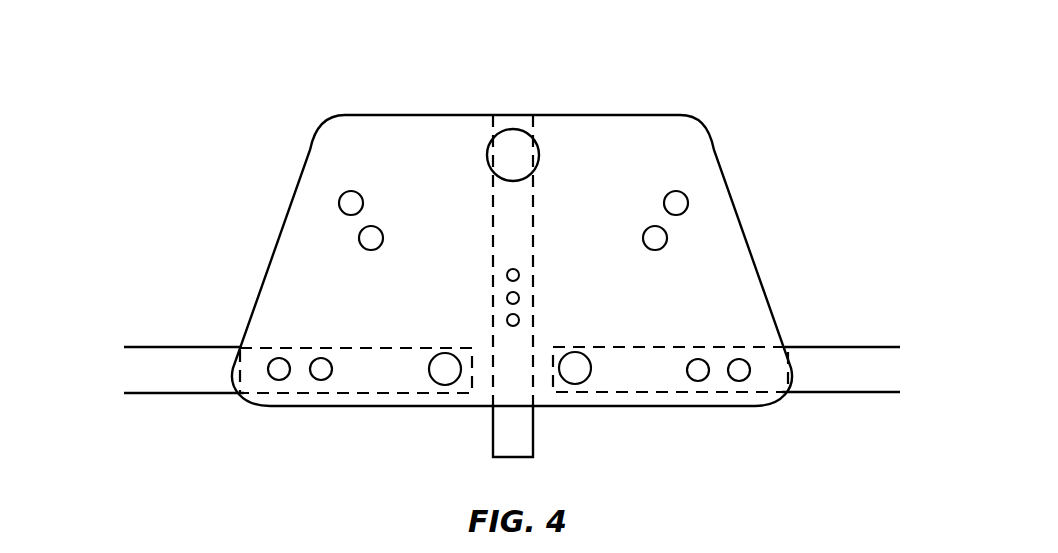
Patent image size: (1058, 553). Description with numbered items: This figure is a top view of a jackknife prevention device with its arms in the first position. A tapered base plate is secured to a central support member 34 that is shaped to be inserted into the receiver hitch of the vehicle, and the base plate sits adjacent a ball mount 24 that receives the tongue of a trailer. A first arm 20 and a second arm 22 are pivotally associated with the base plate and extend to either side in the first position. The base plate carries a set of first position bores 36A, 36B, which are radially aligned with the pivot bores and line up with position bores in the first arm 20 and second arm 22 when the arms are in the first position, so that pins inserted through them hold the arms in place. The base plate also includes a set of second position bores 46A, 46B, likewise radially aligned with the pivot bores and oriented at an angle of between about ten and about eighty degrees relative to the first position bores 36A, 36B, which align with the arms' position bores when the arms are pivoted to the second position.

The first arm 20 is at (147, 345).
The second arm 22 is at (853, 345).
The ball mount 24 is at (508, 128).
The central support member 34 is at (533, 433).
The first position bore 36A is at (322, 357).
The first position bore 36B is at (739, 358).
The second position bore 46A is at (359, 232).
The second position bore 46B is at (667, 236).